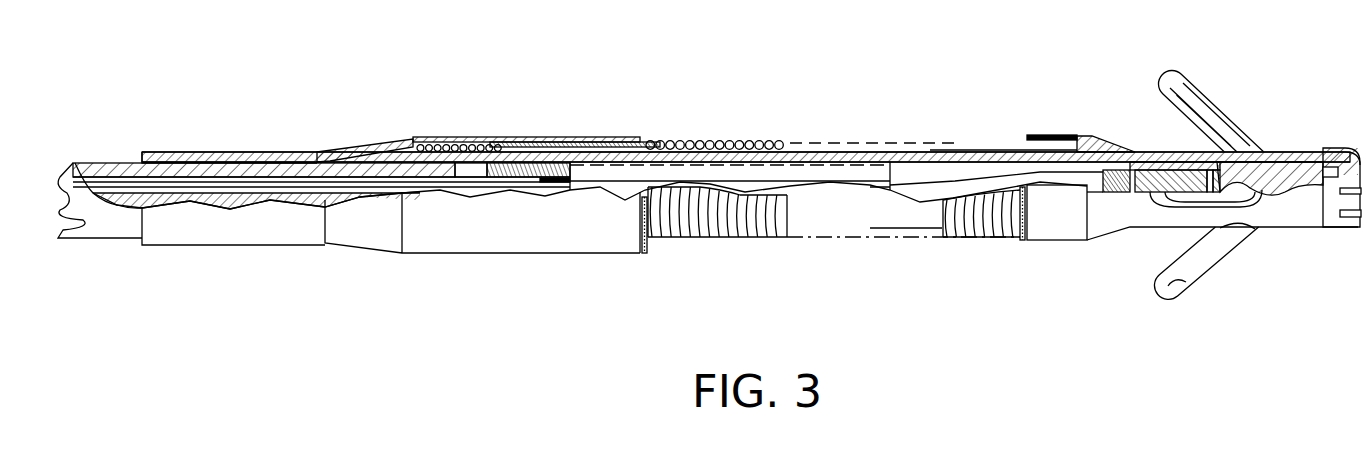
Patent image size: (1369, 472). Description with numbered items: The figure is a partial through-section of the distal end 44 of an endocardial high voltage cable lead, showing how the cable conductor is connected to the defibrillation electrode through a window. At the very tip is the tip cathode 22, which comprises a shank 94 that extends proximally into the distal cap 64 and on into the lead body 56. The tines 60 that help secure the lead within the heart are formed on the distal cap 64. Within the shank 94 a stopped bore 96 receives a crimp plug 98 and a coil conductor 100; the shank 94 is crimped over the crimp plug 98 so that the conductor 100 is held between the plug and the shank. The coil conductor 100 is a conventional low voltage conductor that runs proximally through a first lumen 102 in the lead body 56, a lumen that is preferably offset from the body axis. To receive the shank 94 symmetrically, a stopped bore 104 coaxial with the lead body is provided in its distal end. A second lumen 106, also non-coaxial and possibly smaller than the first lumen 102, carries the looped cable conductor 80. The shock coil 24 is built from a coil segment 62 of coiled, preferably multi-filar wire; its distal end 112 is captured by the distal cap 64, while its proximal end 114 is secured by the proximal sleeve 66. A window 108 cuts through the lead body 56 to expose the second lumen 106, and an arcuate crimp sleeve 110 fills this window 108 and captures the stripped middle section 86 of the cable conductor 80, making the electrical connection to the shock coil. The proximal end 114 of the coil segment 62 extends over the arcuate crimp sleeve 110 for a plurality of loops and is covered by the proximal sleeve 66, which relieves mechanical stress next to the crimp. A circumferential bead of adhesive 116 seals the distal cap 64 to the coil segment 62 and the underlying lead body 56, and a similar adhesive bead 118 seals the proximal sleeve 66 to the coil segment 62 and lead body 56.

The tip cathode 22 is at (1347, 227).
The shock coil 24 is at (725, 122).
The distal end 44 is at (323, 115).
The lead body 56 is at (1022, 157).
The tines 60 is at (1230, 110).
The coil segment 62 is at (728, 237).
The distal cap 64 is at (1073, 233).
The proximal sleeve 66 is at (493, 142).
The cable conductor 80 is at (183, 182).
The stripped middle section 86 is at (468, 163).
The shank 94 is at (1282, 183).
The stopped bore 96 is at (1130, 178).
The crimp plug 98 is at (1163, 188).
The coil conductor 100 is at (1112, 187).
The first lumen 102 is at (873, 183).
The stopped bore 104 is at (907, 180).
The second lumen 106 is at (130, 190).
The window 108 is at (558, 150).
The arcuate crimp sleeve 110 is at (540, 160).
The distal end of coil segment 112 is at (1052, 142).
The proximal end of coil segment 114 is at (430, 148).
The adhesive bead 116 is at (1023, 242).
The adhesive bead 118 is at (645, 260).